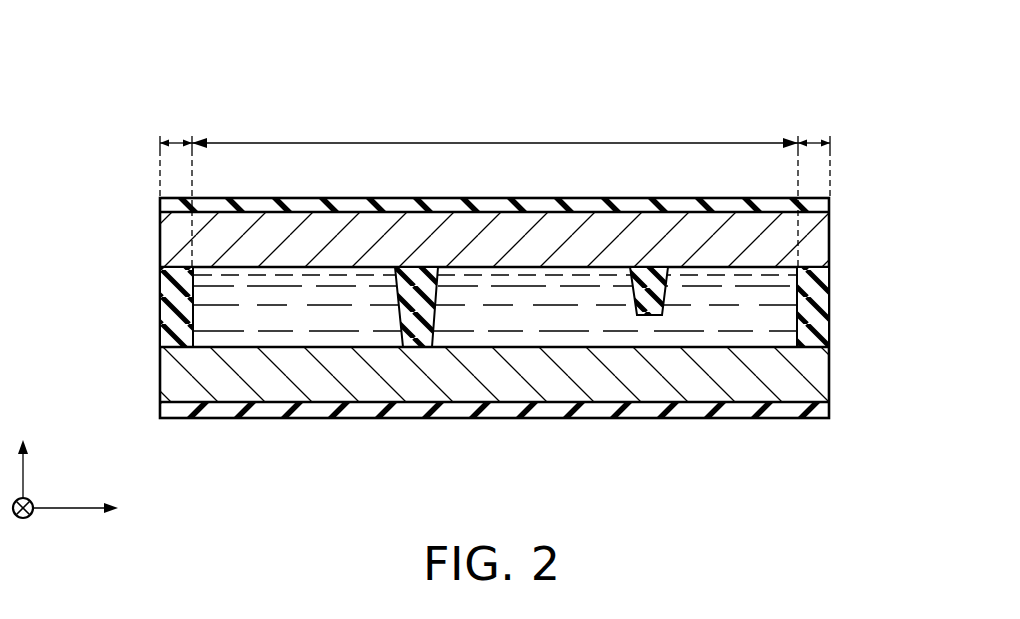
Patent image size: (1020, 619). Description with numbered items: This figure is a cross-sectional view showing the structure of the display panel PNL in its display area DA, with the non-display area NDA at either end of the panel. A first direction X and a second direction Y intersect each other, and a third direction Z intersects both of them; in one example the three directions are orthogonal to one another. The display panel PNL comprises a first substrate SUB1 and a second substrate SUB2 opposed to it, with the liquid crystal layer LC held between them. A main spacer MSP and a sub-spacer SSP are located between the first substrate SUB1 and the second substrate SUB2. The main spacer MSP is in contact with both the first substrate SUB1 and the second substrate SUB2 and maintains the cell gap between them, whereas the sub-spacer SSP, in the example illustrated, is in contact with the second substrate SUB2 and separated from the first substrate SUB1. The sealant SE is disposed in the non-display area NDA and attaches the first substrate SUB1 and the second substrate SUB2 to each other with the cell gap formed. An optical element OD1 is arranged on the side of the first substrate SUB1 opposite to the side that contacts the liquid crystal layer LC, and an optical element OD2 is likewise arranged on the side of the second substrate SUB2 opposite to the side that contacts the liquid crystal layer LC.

The display panel PNL is at (174, 79).
The non-display area NDA is at (496, 185).
The display area DA is at (495, 130).
The optical element OD2 is at (810, 205).
The second substrate SUB2 is at (148, 242).
The sealant SE is at (174, 320).
The liquid crystal layer LC is at (262, 325).
The main spacer MSP is at (430, 318).
The sub-spacer SSP is at (662, 315).
The first substrate SUB1 is at (148, 383).
The optical element OD1 is at (815, 409).
The first direction X is at (88, 509).
The second direction Y is at (23, 524).
The third direction Z is at (24, 454).